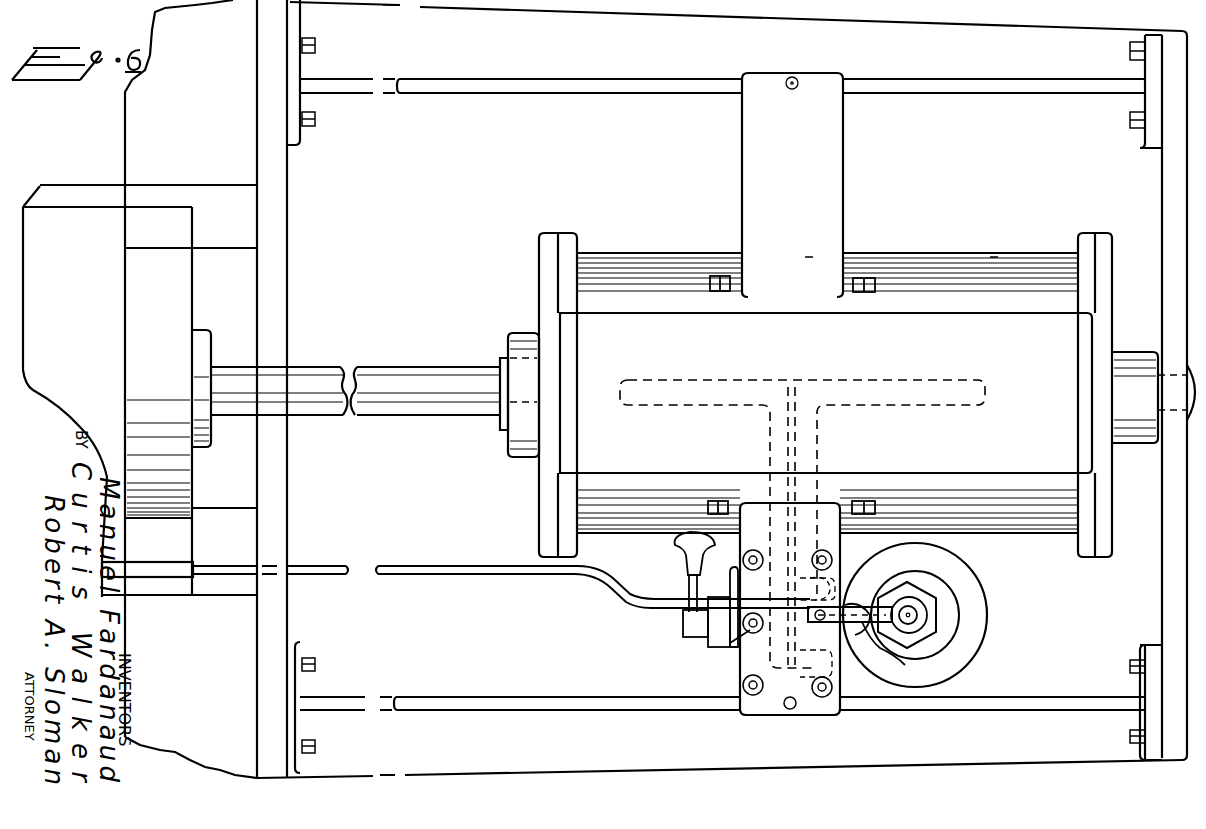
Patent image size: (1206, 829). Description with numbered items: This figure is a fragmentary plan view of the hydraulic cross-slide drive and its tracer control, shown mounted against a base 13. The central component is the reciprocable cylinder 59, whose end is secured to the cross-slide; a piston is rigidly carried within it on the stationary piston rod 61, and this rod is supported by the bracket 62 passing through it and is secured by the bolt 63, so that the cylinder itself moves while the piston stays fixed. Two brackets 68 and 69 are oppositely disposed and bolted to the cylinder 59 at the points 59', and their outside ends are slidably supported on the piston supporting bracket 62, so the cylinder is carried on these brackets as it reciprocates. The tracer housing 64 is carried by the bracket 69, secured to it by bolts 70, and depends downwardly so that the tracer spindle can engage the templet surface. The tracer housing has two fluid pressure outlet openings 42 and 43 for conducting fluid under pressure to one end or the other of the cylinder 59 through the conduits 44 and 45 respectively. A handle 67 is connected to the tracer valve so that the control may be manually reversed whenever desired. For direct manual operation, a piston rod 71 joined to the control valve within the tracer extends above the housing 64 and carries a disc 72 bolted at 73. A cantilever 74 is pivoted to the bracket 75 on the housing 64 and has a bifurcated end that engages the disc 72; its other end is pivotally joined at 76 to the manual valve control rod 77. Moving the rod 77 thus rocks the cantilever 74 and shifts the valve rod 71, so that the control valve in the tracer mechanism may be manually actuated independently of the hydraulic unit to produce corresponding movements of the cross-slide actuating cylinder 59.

The base frame / support plate 13 is at (66, 198).
The fluid pressure outlet opening 42 is at (845, 675).
The fluid pressure outlet opening 43 is at (845, 575).
The conduit 44 is at (705, 386).
The conduit 45 is at (925, 390).
The reciprocable cylinder 59 is at (842, 395).
The bolting points 59' is at (794, 360).
The stationary piston rod 61 is at (418, 411).
The bracket 62 is at (612, 7).
The bolt 63 is at (1186, 372).
The tracer housing 64 is at (977, 631).
The handle 67 is at (677, 530).
The bracket 68 is at (826, 133).
The bracket 69 is at (760, 704).
The bolts 70 is at (728, 650).
The piston rod 71 is at (930, 637).
The disc 72 is at (923, 617).
The bolt 73 is at (917, 606).
The cantilever 74 is at (860, 625).
The bracket 75 is at (873, 582).
The pivot joint 76 is at (842, 583).
The manual valve control rod 77 is at (460, 570).